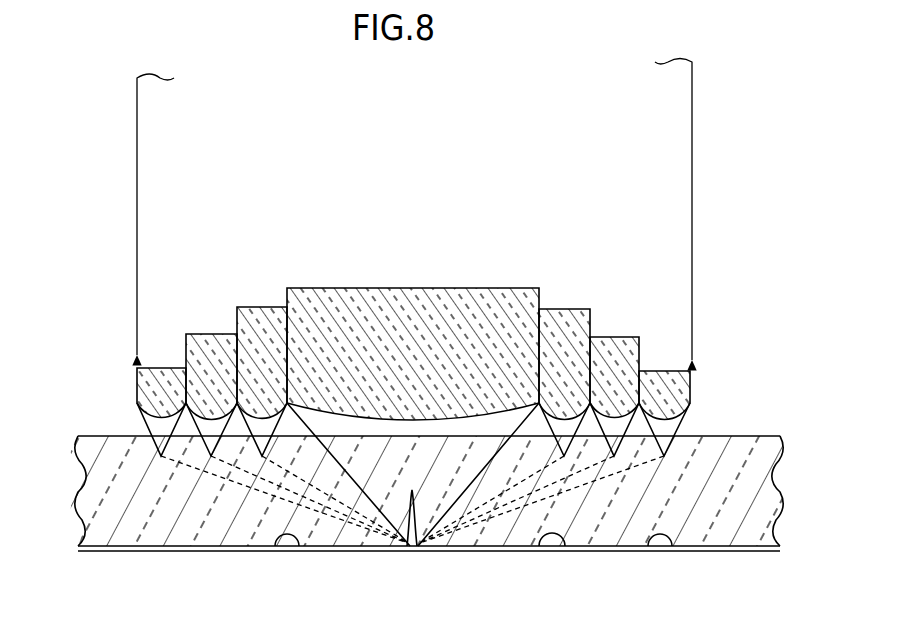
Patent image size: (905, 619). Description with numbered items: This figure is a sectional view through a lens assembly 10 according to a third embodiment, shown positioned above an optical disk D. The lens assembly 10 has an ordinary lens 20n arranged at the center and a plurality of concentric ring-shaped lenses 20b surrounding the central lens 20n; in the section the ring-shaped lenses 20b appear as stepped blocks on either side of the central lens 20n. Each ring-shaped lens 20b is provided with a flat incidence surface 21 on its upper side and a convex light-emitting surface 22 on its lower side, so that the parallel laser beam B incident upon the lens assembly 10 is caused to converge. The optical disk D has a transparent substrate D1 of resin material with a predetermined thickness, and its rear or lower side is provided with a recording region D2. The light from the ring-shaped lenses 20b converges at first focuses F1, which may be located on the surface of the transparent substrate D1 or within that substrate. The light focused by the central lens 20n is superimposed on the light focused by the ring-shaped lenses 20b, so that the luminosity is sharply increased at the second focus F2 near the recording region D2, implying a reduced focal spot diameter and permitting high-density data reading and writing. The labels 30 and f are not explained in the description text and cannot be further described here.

The lens assembly 10 is at (432, 329).
The ordinary lens 20n is at (476, 288).
The ring-shaped lens 20b is at (560, 309).
The flat incidence surface 21 is at (262, 307).
The convex light-emitting surface 22 is at (245, 462).
The bump group 30 is at (164, 303).
The parallel laser beam B is at (693, 156).
The optical disk D is at (775, 434).
The transparent substrate D1 is at (780, 480).
The recording region D2 is at (660, 548).
The first focus F1 is at (152, 462).
The second focus F2 is at (413, 548).
The crack f is at (280, 540).